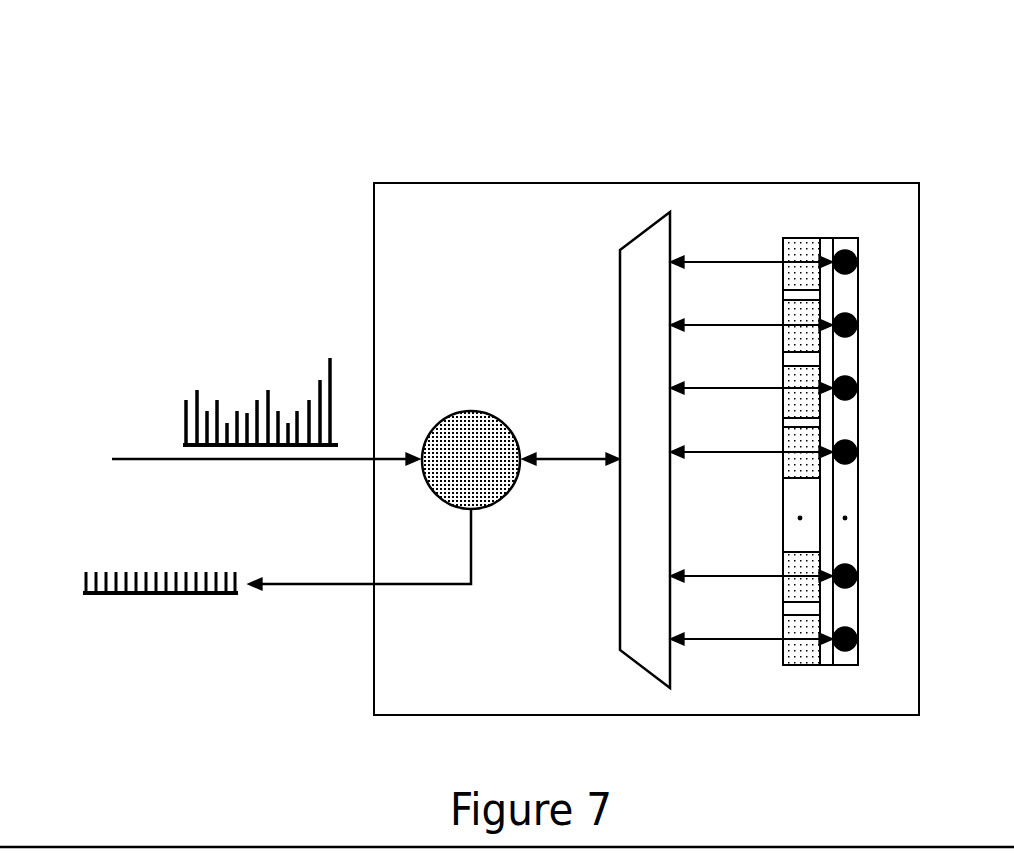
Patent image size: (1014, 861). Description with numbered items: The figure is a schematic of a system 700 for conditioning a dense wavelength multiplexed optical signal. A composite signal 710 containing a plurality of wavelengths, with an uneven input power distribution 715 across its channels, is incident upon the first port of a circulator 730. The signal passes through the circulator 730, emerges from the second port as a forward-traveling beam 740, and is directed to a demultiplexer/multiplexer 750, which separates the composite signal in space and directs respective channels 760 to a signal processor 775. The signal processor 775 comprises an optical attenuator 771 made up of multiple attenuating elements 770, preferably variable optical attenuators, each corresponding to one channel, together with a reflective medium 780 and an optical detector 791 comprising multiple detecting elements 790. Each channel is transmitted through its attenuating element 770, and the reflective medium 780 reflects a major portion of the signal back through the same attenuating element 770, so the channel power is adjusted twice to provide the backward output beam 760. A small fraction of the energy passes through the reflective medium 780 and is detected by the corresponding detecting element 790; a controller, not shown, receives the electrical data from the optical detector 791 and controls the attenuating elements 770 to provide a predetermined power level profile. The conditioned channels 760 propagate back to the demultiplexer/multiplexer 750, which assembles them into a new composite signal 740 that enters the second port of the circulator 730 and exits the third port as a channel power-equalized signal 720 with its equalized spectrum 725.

The optical system 700 is at (563, 52).
The composite signal 710 is at (160, 457).
The input power distribution 715 is at (297, 417).
The channel power-equalized signal 720 is at (347, 584).
The spectrum 725 is at (173, 583).
The circulator 730 is at (471, 435).
The forward-traveling beam 740 is at (572, 459).
The demultiplexer/multiplexer 750 is at (647, 275).
The channel signals 760 is at (733, 262).
The attenuating elements 770 is at (810, 250).
The optical attenuator 771 is at (768, 660).
The signal processor 775 is at (825, 680).
The reflective medium 780 is at (829, 250).
The detecting elements 790 is at (850, 252).
The optical detector 791 is at (874, 532).